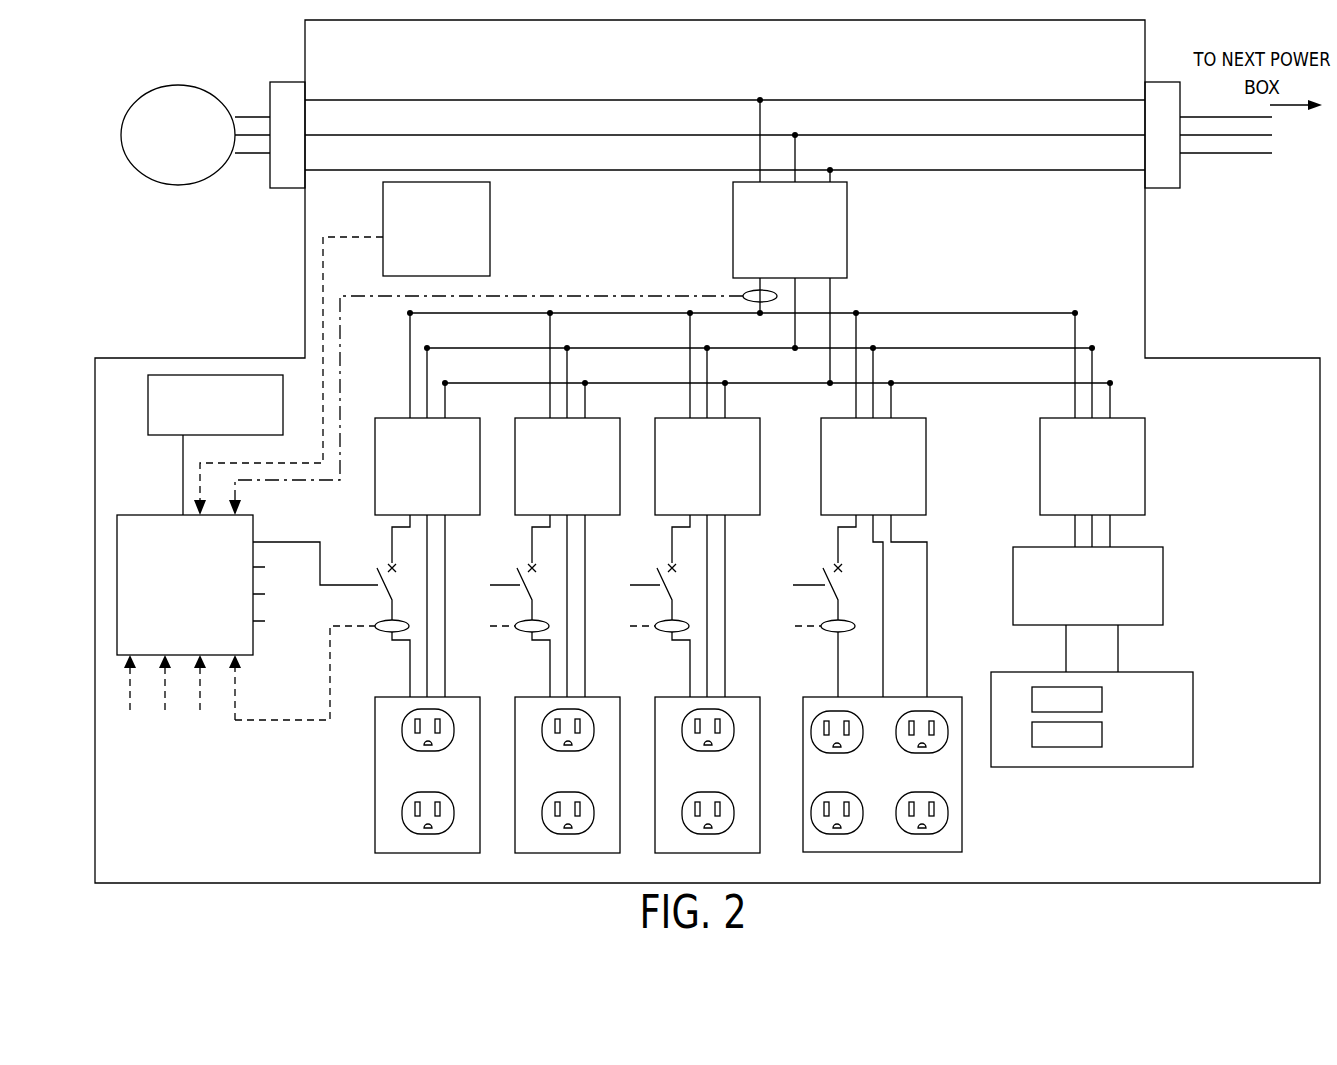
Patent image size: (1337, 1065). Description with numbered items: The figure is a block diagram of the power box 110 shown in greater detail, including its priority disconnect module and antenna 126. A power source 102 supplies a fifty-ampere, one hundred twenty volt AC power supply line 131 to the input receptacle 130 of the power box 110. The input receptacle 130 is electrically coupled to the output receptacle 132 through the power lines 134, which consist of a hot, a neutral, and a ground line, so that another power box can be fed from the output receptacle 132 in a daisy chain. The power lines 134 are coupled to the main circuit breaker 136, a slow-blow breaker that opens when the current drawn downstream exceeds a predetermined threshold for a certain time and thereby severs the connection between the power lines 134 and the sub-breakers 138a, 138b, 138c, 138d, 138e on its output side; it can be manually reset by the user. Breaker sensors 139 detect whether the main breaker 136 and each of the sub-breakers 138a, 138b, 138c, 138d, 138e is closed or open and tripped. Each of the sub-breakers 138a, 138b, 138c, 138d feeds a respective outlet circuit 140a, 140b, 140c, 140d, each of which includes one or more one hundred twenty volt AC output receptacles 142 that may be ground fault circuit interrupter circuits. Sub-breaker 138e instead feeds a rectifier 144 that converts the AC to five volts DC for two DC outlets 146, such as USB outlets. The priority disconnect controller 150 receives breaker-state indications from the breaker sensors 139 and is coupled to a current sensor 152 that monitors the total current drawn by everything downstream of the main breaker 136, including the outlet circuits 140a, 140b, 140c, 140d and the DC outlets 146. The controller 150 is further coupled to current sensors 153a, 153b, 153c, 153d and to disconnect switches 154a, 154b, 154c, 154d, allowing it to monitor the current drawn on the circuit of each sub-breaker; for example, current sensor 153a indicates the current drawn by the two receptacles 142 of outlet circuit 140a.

The power source 102 is at (120, 135).
The power box 110 is at (1280, 356).
The antenna 126 is at (172, 375).
The input receptacle 130 is at (290, 190).
The power supply line 131 is at (245, 76).
The output receptacle 132 is at (1160, 190).
The power lines 134 is at (566, 90).
The main circuit breaker 136 is at (847, 232).
The sub-breaker 138a is at (409, 501).
The sub-breaker 138b is at (549, 501).
The sub-breaker 138c is at (689, 501).
The sub-breaker 138d is at (855, 501).
The sub-breaker 138e is at (1074, 501).
The breaker sensors 139 is at (490, 232).
The outlet circuit 140a is at (410, 785).
The outlet circuit 140b is at (550, 785).
The outlet circuit 140c is at (690, 785).
The outlet circuit 140d is at (865, 783).
The output receptacle 142 is at (406, 811).
The rectifier 144 is at (1163, 585).
The DC outlets 146 is at (1102, 700).
The priority disconnect controller 150 is at (143, 515).
The current sensor 152 is at (743, 293).
The current sensor 153a is at (384, 635).
The current sensor 153b is at (524, 635).
The current sensor 153c is at (664, 635).
The current sensor 153d is at (830, 635).
The disconnect switch 154a is at (377, 570).
The disconnect switch 154b is at (518, 572).
The disconnect switch 154c is at (658, 572).
The disconnect switch 154d is at (824, 572).